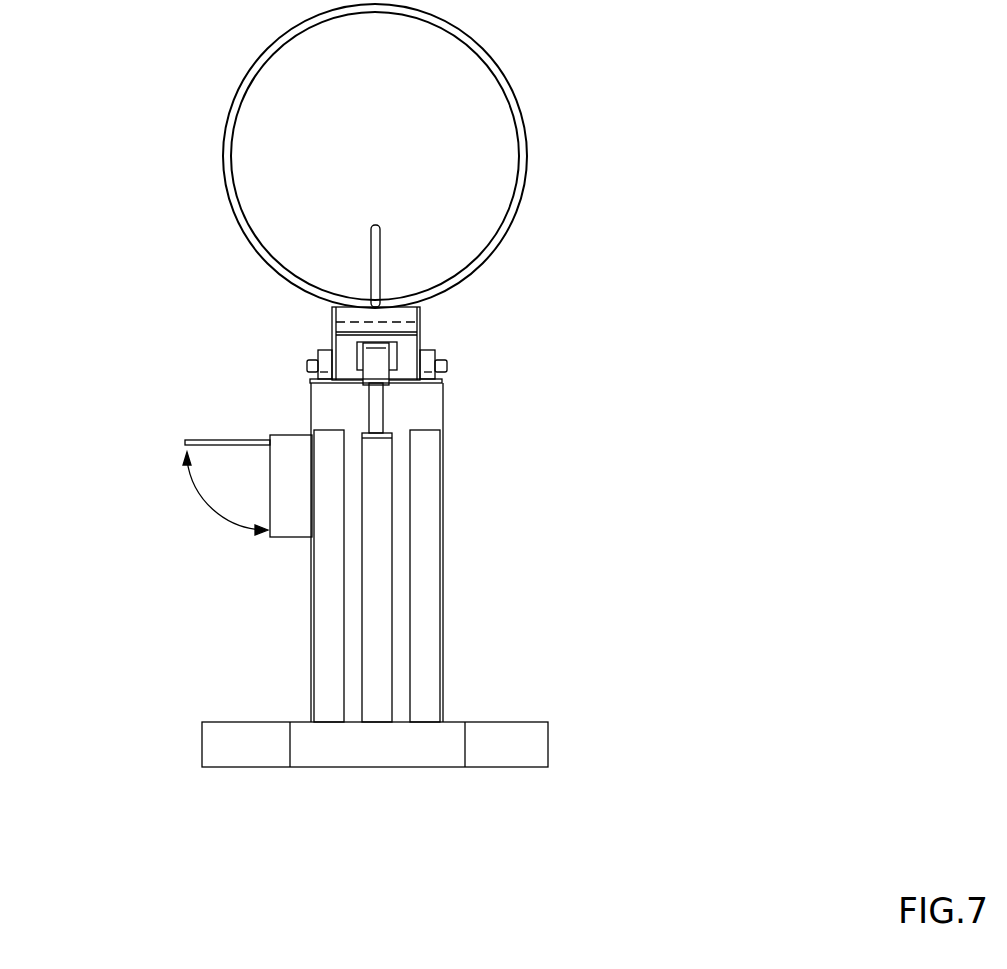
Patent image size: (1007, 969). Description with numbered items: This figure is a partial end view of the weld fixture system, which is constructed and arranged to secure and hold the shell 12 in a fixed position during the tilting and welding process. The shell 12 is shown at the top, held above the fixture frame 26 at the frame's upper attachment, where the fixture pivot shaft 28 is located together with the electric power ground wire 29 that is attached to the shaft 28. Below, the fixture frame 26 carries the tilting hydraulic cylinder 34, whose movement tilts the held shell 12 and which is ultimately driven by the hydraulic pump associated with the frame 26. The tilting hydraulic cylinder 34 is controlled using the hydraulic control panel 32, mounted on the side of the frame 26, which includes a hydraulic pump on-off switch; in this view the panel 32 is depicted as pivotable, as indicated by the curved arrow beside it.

The shell 12 is at (522, 120).
The fixture frame 26 is at (483, 722).
The fixture pivot shaft 28 is at (310, 360).
The electric power ground wire 29 is at (432, 347).
The hydraulic control panel 32 is at (280, 435).
The tilting hydraulic cylinder 34 is at (388, 492).